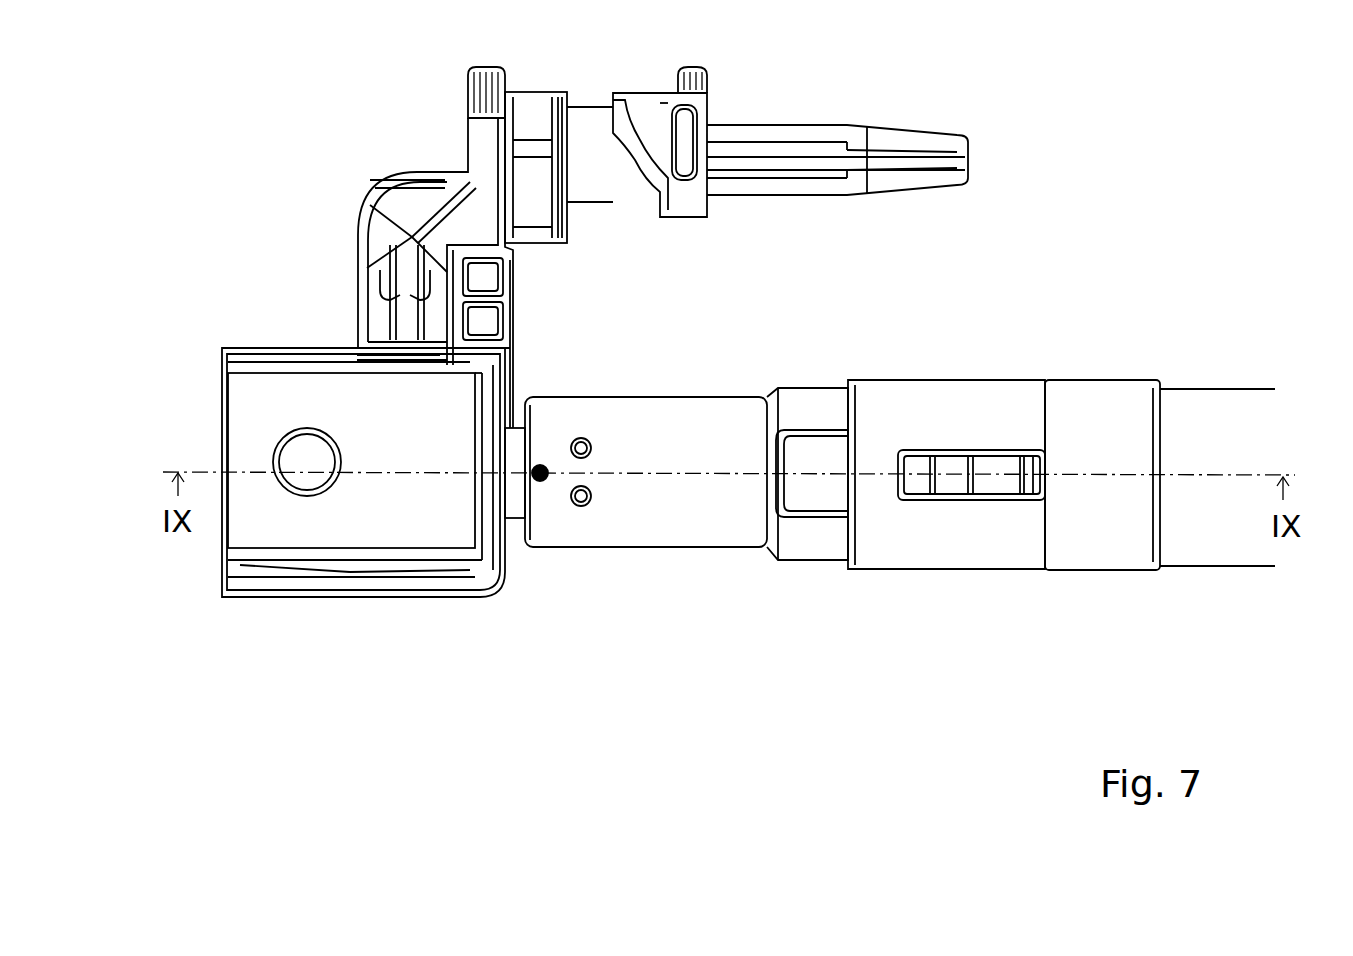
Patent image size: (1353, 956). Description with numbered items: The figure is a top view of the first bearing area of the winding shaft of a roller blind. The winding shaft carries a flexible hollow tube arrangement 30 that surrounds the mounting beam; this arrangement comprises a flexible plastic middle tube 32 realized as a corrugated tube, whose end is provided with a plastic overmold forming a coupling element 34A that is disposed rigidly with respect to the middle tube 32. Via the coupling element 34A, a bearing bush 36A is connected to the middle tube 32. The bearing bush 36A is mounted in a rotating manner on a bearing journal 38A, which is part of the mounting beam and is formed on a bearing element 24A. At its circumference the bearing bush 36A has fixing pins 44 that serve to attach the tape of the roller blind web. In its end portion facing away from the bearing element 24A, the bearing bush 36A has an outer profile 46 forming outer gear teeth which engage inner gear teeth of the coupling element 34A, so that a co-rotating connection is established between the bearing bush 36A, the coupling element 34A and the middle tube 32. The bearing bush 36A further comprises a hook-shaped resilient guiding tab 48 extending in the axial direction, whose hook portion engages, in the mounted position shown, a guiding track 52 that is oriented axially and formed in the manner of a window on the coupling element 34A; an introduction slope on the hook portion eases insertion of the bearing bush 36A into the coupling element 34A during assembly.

The bearing element 24A is at (400, 560).
The flexible hollow tube arrangement 30 is at (1112, 378).
The middle tube 32 is at (1222, 536).
The coupling element 34A is at (952, 398).
The bearing bush 36A is at (690, 512).
The bearing journal 38A is at (514, 492).
The fixing pins 44 is at (581, 494).
The outer profile 46 is at (813, 462).
The guiding tab 48 is at (937, 486).
The guiding track 52 is at (998, 500).